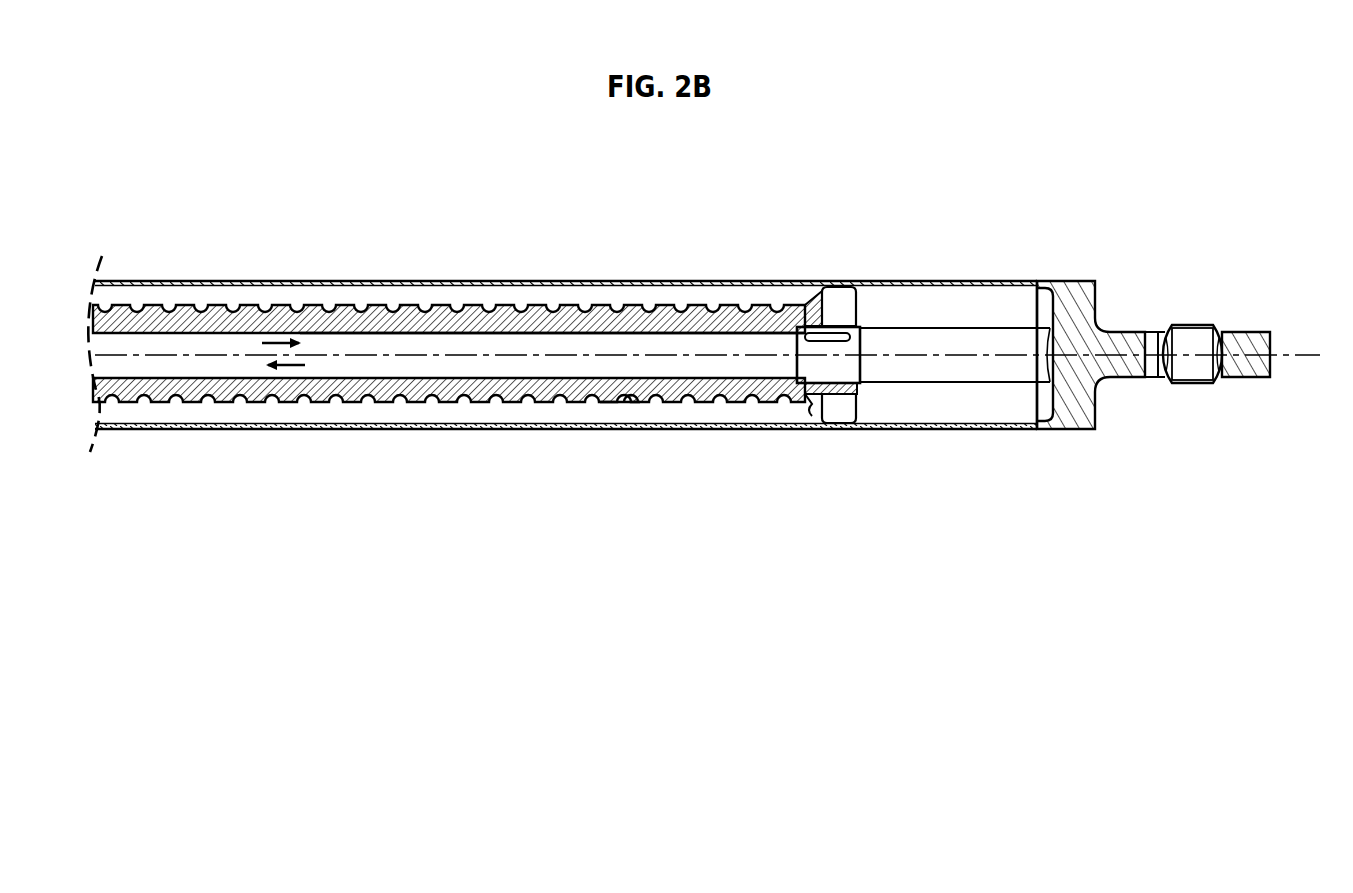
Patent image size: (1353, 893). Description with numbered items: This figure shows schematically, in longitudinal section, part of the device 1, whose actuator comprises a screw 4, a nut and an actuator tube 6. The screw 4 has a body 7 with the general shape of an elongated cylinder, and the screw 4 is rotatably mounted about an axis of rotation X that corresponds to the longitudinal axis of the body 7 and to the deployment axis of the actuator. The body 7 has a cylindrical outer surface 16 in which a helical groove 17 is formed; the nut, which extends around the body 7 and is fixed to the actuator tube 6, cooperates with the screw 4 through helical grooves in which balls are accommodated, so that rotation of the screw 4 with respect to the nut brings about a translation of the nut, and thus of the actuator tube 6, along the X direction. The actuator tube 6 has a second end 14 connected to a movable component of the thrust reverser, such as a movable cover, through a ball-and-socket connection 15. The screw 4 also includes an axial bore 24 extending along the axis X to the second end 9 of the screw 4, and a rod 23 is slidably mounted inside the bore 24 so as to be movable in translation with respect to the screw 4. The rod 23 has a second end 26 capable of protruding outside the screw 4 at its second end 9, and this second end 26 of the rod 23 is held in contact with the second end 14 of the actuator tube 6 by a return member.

The device 1 is at (845, 129).
The screw 4 is at (449, 361).
The actuator tube 6 is at (945, 430).
The body 7 is at (580, 395).
The second end 9 is at (808, 395).
The second end 14 is at (1071, 407).
The ball-and-socket connection 15 is at (1186, 372).
The cylindrical outer surface 16 is at (627, 404).
The helical groove 17 is at (639, 409).
The rod 23 is at (590, 340).
The axial bore 24 is at (454, 335).
The second end 26 is at (963, 340).